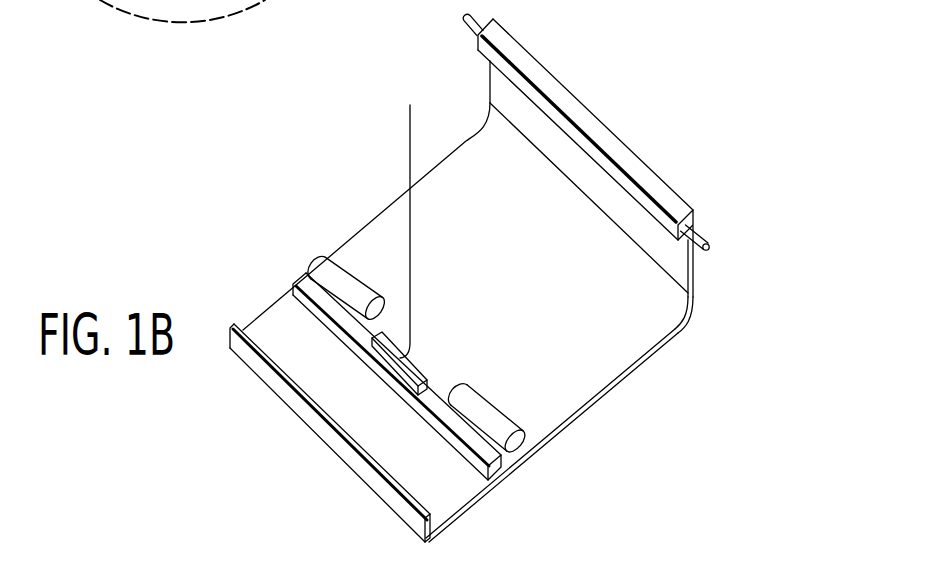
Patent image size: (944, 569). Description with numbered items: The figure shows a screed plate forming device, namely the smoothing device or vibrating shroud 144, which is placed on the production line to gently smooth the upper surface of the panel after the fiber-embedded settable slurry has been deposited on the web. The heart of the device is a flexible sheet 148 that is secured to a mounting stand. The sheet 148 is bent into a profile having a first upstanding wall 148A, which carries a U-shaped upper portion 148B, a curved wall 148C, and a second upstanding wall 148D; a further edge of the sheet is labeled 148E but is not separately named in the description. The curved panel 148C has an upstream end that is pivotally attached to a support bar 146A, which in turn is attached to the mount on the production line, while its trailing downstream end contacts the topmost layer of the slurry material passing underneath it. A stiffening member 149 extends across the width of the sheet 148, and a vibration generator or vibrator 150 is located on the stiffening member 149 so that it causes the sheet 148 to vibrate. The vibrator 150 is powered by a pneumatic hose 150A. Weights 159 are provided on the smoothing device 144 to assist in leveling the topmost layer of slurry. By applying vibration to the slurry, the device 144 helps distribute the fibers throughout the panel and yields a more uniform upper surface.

The smoothing device 144 is at (626, 441).
The support bar 146A is at (708, 250).
The flexible sheet 148 is at (602, 375).
The first upstanding wall 148A is at (695, 232).
The U-shaped upper portion 148B is at (617, 148).
The curved wall 148C is at (593, 350).
The second upstanding wall 148D is at (347, 458).
The bottom edge 148E is at (459, 491).
The stiffening member 149 is at (510, 470).
The vibration generator 150 is at (417, 368).
The pneumatic hose 150A is at (410, 128).
The weights 159 is at (331, 262).